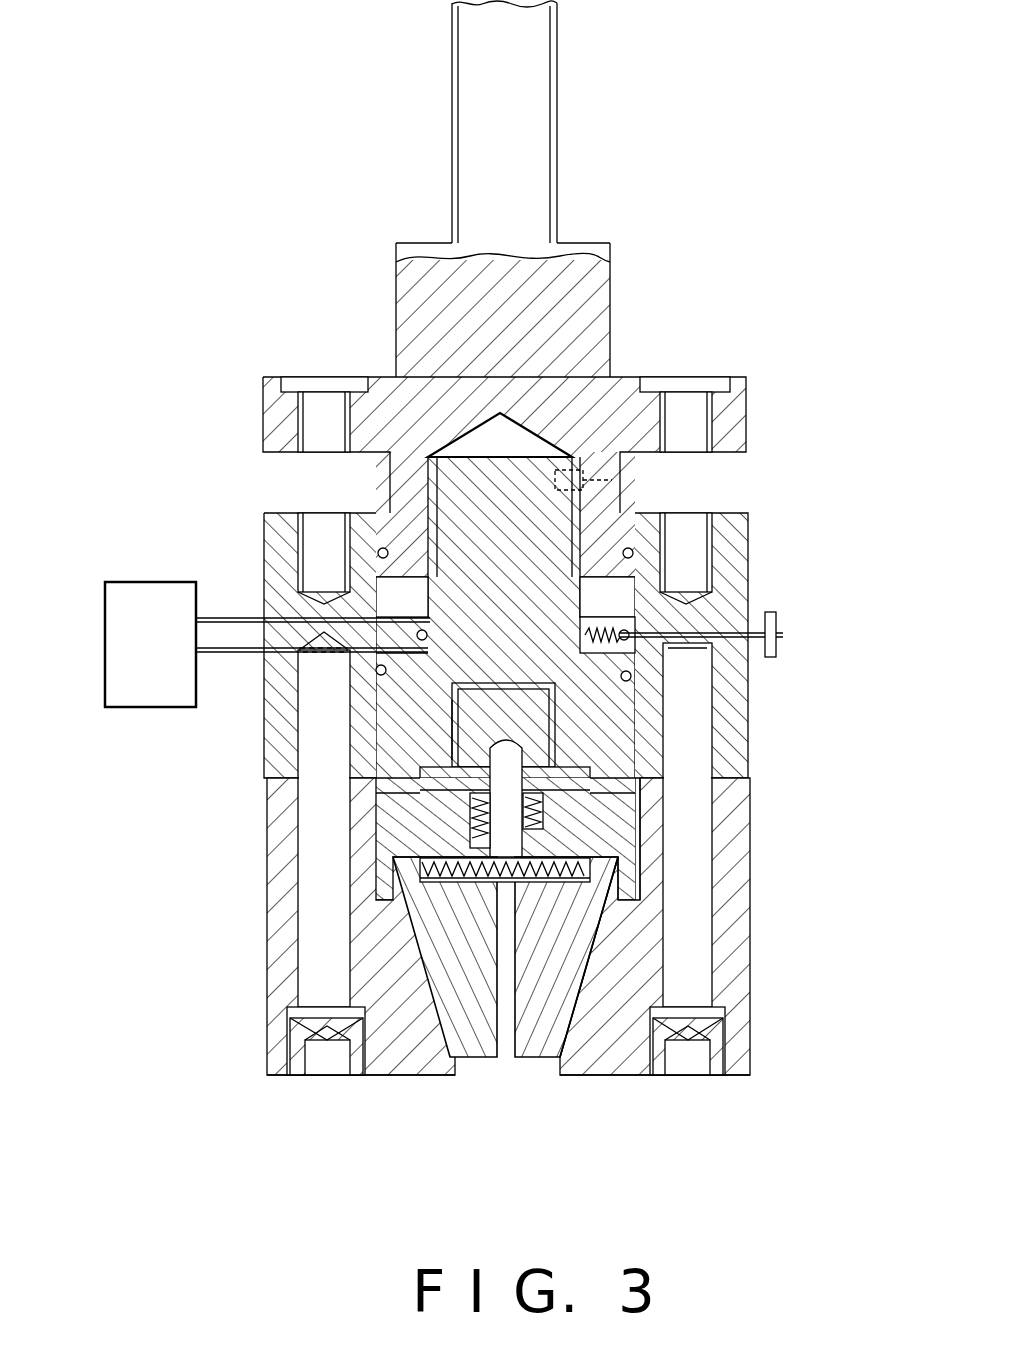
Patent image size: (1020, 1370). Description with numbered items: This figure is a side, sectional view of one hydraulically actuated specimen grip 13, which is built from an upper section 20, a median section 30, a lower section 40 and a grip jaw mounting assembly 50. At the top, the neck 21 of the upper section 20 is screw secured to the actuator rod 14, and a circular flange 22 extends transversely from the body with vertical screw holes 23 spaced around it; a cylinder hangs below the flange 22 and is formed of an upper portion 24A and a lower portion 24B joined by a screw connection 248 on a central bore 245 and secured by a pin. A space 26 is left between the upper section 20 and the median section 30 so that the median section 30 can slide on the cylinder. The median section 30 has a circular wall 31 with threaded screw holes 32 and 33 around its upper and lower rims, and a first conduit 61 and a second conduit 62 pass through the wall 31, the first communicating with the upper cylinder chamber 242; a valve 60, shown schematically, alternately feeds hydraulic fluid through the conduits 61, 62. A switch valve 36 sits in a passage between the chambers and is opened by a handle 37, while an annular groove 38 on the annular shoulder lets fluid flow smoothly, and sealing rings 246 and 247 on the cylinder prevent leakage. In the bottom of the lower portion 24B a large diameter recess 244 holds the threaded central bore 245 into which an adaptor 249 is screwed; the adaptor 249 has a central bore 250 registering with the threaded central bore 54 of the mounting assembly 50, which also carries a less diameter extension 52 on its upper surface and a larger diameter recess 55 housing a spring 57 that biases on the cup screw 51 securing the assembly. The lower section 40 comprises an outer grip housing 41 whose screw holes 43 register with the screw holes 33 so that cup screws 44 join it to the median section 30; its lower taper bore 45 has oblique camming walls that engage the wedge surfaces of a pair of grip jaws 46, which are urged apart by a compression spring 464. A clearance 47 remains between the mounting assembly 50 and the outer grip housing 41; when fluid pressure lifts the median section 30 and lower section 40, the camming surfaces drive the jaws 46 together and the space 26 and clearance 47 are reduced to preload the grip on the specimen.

The grip 13 is at (246, 514).
The actuator rod 14 is at (552, 140).
The upper section 20 is at (626, 298).
The neck 21 is at (396, 275).
The circular flange 22 is at (746, 412).
The vertical screw holes 23 is at (318, 382).
The upper portion of the cylinder 24A is at (623, 517).
The lower portion of the cylinder 24B is at (458, 663).
The space 26 is at (335, 488).
The median section 30 is at (757, 565).
The circular wall 31 is at (262, 752).
The threaded screw holes 32 is at (695, 513).
The threaded screw holes 33 is at (735, 764).
The switch valve 36 is at (713, 668).
The handle 37 is at (783, 635).
The annular groove 38 is at (387, 608).
The lower section 40 is at (762, 830).
The outer grip housing 41 is at (758, 953).
The screw holes 43 is at (315, 912).
The cup screws 44 is at (710, 1062).
The taper bore 45 is at (577, 986).
The grip jaws 46 is at (497, 1065).
The clearance 47 is at (641, 893).
The grip jaw mounting assembly 50 is at (376, 808).
The cup screw 51 is at (453, 754).
The less diameter extension 52 is at (712, 768).
The threaded central bore 54 is at (540, 817).
The larger diameter recess 55 is at (642, 850).
The spring 57 is at (472, 804).
The valve 60 is at (105, 648).
The first conduit 61 is at (228, 618).
The second conduit 62 is at (228, 660).
The upper cylinder chamber 242 is at (623, 604).
The large diameter recess 244 is at (557, 700).
The threaded central bore 245 is at (453, 437).
The sealing ring 246 is at (388, 555).
The sealing ring 247 is at (385, 677).
The screw connection 248 is at (610, 420).
The adaptor 249 is at (523, 705).
The central bore 250 is at (528, 745).
The compression spring 464 is at (537, 893).